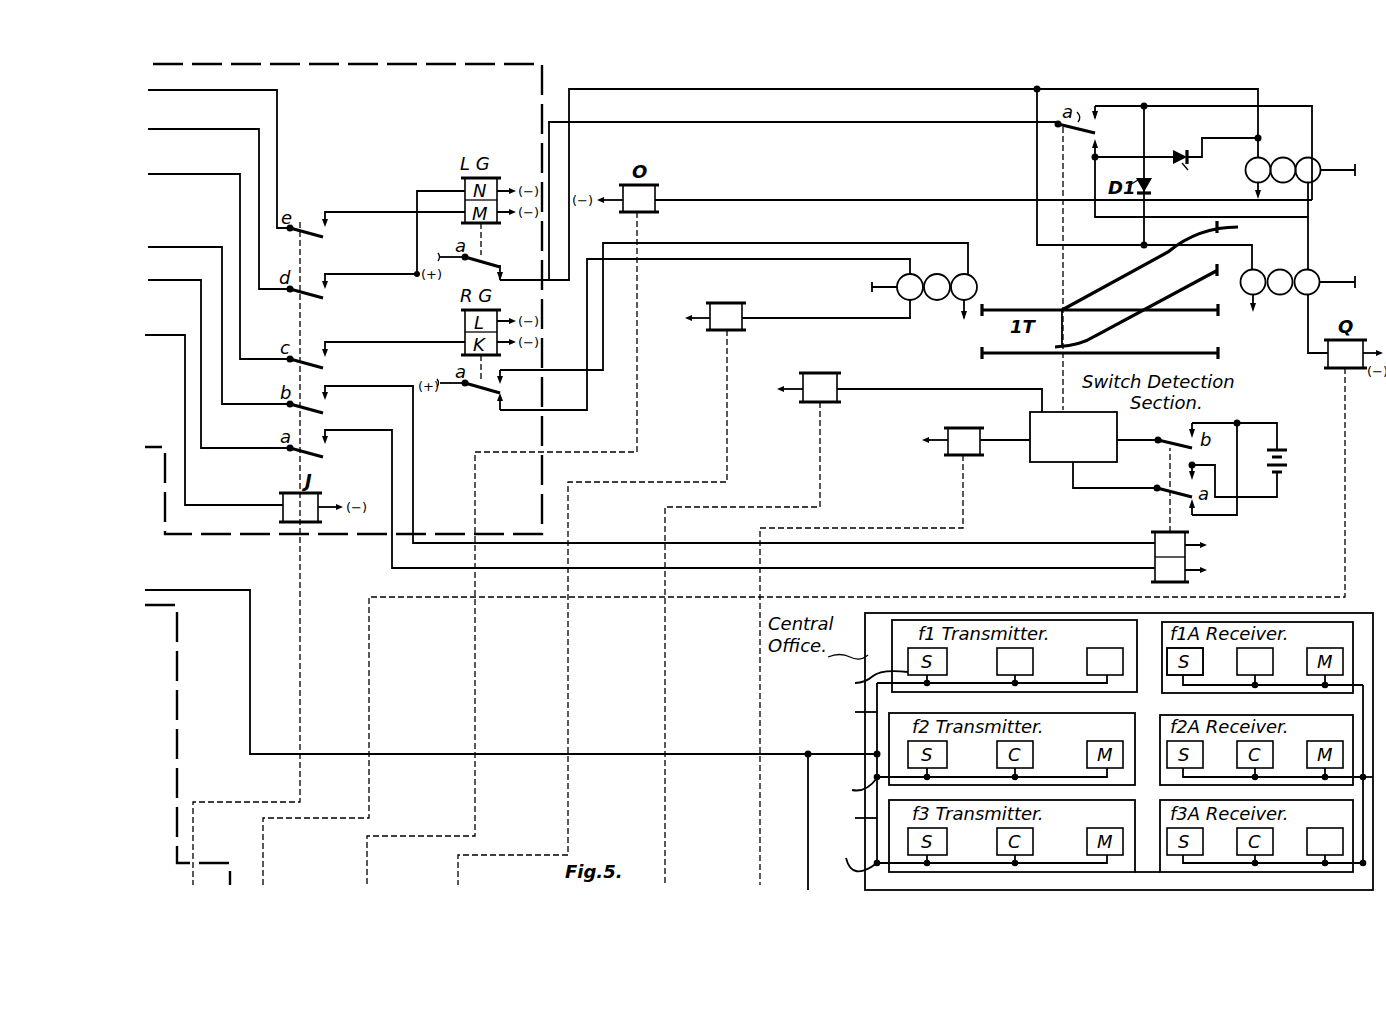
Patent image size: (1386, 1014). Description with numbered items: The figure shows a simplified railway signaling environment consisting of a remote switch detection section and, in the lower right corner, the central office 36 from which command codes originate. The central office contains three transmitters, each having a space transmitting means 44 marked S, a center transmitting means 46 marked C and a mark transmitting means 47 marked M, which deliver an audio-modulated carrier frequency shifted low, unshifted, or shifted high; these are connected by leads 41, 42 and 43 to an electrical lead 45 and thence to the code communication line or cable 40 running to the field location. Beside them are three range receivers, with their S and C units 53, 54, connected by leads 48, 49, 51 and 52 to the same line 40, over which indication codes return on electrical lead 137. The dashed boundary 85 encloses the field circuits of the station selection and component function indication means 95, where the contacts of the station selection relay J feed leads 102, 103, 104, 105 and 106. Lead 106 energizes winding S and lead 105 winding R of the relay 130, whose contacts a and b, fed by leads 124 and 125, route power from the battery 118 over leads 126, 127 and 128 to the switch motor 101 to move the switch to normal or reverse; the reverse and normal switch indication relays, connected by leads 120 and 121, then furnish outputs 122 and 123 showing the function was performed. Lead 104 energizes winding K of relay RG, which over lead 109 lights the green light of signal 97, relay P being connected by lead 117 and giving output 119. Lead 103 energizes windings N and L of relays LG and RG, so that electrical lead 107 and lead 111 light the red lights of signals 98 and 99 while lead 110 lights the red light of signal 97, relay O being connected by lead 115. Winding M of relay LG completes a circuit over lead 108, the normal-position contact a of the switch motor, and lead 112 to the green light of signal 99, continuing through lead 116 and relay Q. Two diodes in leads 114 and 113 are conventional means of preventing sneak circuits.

The central office 36 is at (1350, 658).
The code communication line 40 is at (194, 595).
The lead 41 is at (851, 709).
The lead 42 is at (849, 787).
The lead 43 is at (850, 854).
The transmitting means 44 is at (867, 681).
The electrical lead 45 is at (850, 815).
The transmitting means 46 is at (997, 668).
The transmitting means 47 is at (1087, 668).
The lead 48 is at (1363, 706).
The lead 49 is at (1358, 780).
The lead 51 is at (1322, 862).
The lead 52 is at (1157, 875).
The selector of f1A receiver 53 is at (1203, 664).
The coding unit of f1A receiver 54 is at (1273, 672).
The field station boundary 85 is at (218, 534).
The station selection and component function indication means 95 is at (178, 680).
The light signal 97 is at (872, 287).
The light signal 98 is at (1326, 168).
The light signal 99 is at (1338, 276).
The switch motor 101 is at (1035, 462).
The control wire 102 is at (386, 212).
The lead 103 is at (386, 274).
The lead 104 is at (386, 342).
The lead 105 is at (389, 386).
The lead 106 is at (386, 430).
The electrical lead 107 is at (881, 198).
The lead 108 is at (540, 256).
The lead 109 is at (588, 370).
The lead 110 is at (595, 410).
The lead 111 is at (1037, 153).
The lead 112 is at (1097, 168).
The lead 113 is at (1144, 123).
The lead 114 is at (1160, 157).
The wire 115 is at (1300, 202).
The lead 116 is at (1310, 307).
The lead 117 is at (868, 318).
The battery 118 is at (1345, 488).
The output 119 is at (727, 426).
The lead 120 is at (920, 382).
The lead 121 is at (1008, 447).
The output 122 is at (817, 455).
The output 123 is at (962, 496).
The wire 124 is at (1082, 493).
The wire 125 is at (1138, 440).
The electrical lead 126 is at (1245, 422).
The lead 127 is at (1228, 479).
The lead 128 is at (1237, 510).
The relay 130 is at (1152, 582).
The electrical lead 137 is at (808, 870).